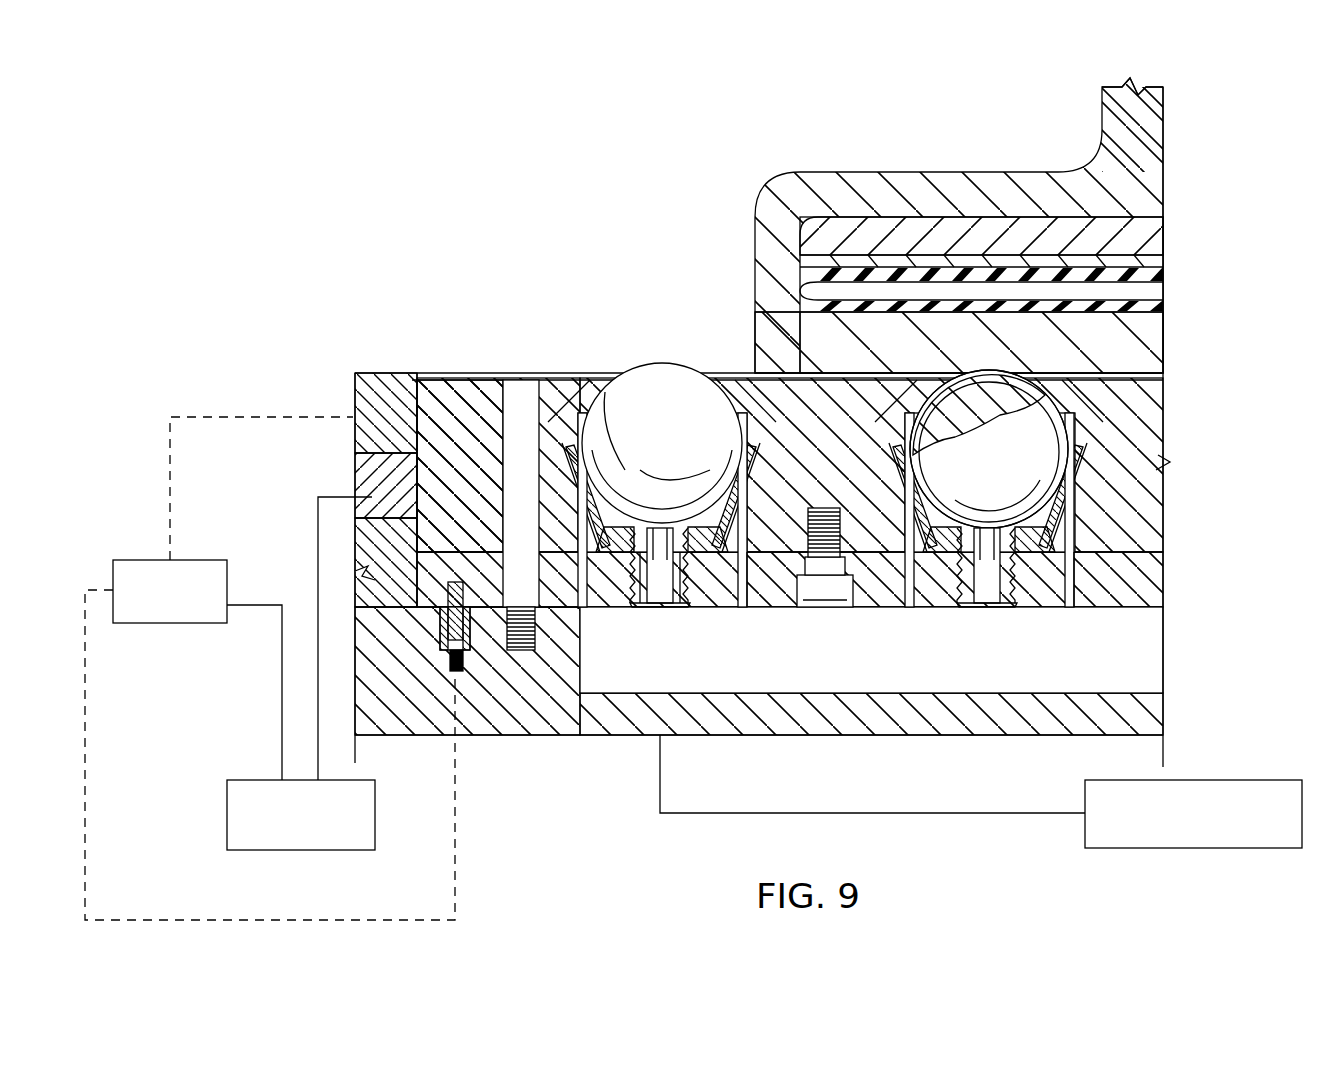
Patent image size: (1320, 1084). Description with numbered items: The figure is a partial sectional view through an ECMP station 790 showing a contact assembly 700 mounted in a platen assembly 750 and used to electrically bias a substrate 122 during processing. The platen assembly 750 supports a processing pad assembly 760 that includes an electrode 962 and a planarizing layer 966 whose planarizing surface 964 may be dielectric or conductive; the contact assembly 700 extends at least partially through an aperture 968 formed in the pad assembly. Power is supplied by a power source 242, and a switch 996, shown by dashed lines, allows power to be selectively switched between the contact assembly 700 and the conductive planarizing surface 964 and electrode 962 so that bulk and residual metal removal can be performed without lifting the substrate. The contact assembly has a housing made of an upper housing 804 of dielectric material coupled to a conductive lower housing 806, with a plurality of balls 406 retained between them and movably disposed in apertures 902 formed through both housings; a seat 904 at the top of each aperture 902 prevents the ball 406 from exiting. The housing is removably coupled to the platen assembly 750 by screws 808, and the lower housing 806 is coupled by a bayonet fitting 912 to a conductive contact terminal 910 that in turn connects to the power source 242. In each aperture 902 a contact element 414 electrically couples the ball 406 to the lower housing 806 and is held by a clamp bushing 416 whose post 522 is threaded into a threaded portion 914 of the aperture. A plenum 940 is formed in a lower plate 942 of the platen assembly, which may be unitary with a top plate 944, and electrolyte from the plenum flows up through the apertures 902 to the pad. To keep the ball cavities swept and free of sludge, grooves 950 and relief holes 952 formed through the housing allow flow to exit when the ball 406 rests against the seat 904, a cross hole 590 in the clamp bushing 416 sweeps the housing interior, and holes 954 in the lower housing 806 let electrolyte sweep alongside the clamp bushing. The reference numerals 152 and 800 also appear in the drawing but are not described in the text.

The substrate 122 is at (1158, 330).
The hood / cover 152 is at (793, 192).
The power source 242 is at (375, 808).
The ball 406 is at (660, 365).
The contact element 414 is at (580, 455).
The clamp bushing 416 is at (625, 535).
The post 522 is at (686, 602).
The cross hole 590 is at (700, 510).
The contact assembly 700 is at (605, 363).
The platen assembly 750 is at (1178, 700).
The processing pad assembly 760 is at (393, 366).
The ECMP station 790 is at (633, 200).
The upper body layer 800 is at (1148, 500).
The upper housing 804 is at (1158, 536).
The lower housing 806 is at (1160, 585).
The screw 808 is at (523, 386).
The aperture 902 is at (775, 428).
The seat 904 is at (615, 385).
The contact terminal 910 is at (472, 640).
The bayonet fitting 912 is at (360, 578).
The threaded portion 914 is at (628, 580).
The plenum 940 is at (788, 658).
The lower plate 942 is at (858, 705).
The top plate 944 is at (360, 540).
The groove 950 is at (600, 378).
The relief hole 952 is at (750, 376).
The hole 954 is at (746, 602).
The electrode 962 is at (418, 372).
The planarizing surface 964 is at (412, 373).
The planarizing layer 966 is at (362, 370).
The aperture 968 is at (425, 395).
The switch 996 is at (178, 626).